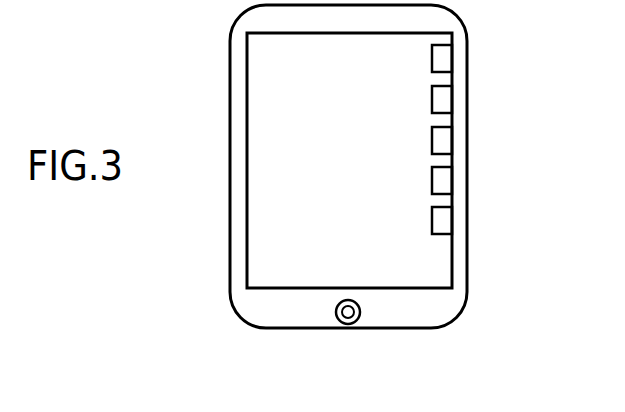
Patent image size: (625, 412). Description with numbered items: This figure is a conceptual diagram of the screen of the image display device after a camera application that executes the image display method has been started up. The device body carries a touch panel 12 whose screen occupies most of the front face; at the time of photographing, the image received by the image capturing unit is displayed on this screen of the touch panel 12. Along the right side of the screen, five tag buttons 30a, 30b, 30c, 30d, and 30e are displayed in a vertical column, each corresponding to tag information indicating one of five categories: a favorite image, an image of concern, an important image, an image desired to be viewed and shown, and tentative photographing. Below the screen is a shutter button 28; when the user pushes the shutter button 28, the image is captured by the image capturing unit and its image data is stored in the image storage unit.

The touch panel 12 is at (278, 195).
The shutter button 28 is at (348, 325).
The tag button 30a is at (443, 60).
The tag button 30b is at (443, 102).
The tag button 30c is at (443, 142).
The tag button 30d is at (443, 182).
The tag button 30e is at (443, 222).